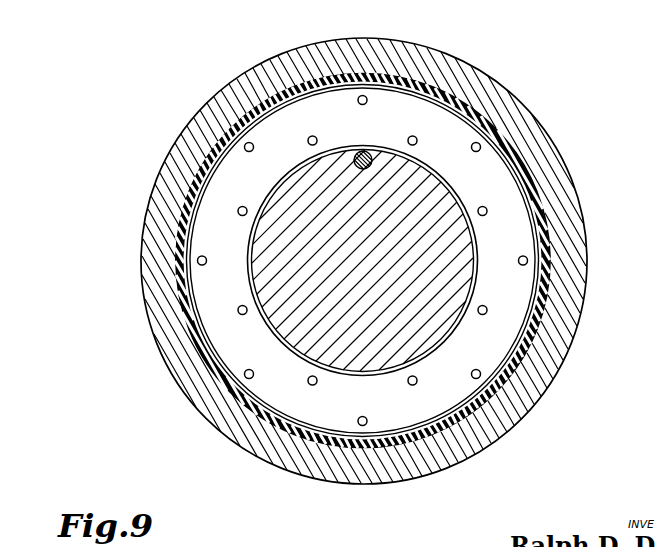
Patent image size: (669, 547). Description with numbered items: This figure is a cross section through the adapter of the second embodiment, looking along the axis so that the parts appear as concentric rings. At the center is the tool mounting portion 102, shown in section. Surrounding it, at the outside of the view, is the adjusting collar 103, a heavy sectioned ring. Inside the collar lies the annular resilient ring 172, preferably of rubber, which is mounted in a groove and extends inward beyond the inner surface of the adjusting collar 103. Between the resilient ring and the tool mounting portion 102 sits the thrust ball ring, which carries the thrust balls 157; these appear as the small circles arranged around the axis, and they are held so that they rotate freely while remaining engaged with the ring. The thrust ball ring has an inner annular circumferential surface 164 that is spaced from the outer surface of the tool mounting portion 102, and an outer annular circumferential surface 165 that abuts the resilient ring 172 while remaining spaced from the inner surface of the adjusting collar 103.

The adjusting collar 103 is at (510, 122).
The annular resilient ring 172 is at (540, 213).
The outer annular circumferential surface 165 is at (426, 87).
The inner annular circumferential surface 164 is at (415, 163).
The tool mounting portion 102 is at (440, 323).
The thrust balls 157 is at (367, 95).